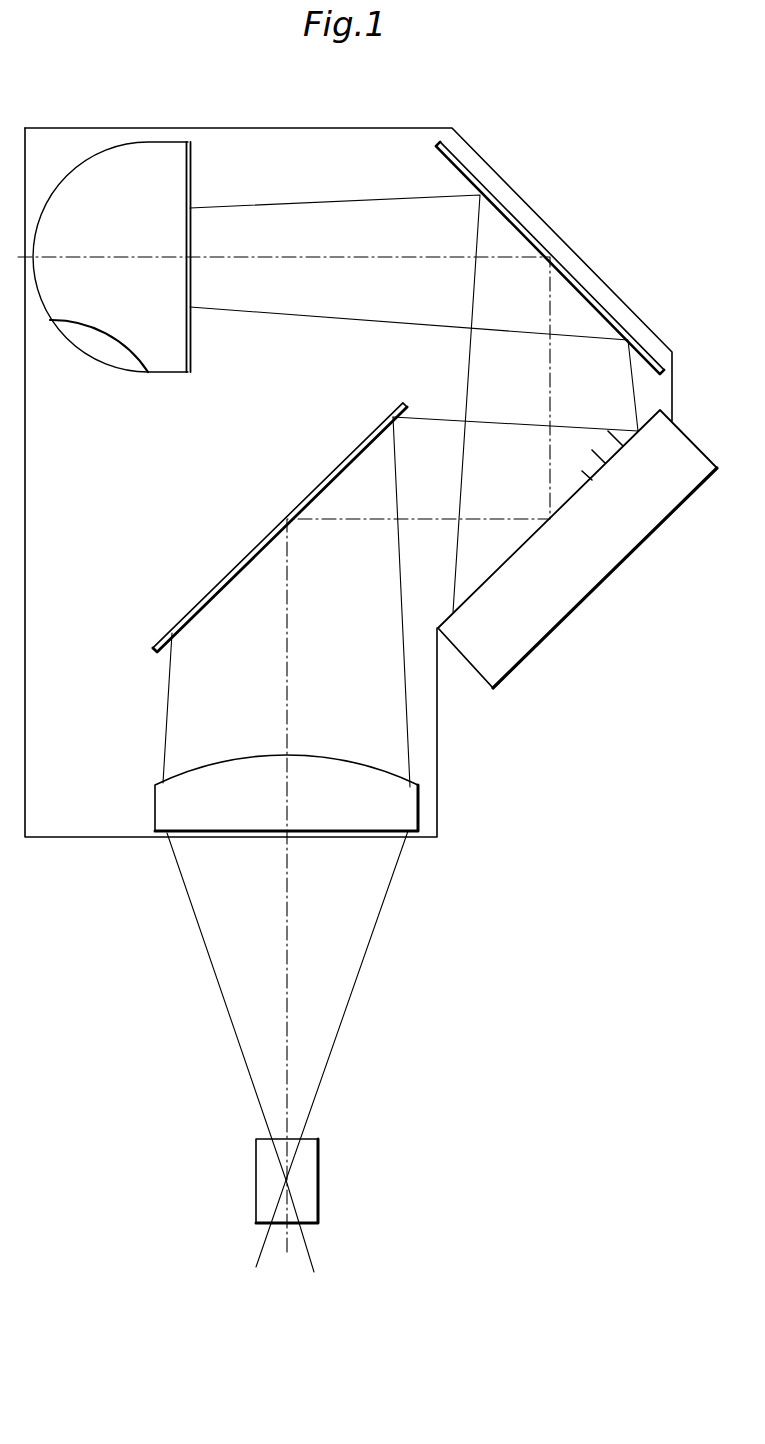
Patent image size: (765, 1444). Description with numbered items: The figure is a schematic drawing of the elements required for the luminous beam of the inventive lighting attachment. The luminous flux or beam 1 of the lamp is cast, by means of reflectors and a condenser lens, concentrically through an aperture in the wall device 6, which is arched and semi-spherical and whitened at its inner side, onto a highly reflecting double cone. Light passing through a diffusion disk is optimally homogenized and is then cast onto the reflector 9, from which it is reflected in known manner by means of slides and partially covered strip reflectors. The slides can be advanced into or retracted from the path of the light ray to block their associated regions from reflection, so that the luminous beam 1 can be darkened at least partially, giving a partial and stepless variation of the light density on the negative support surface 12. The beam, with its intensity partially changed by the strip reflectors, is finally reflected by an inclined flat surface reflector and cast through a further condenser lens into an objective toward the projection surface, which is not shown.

The luminous beam 1 is at (317, 317).
The wall device 6 is at (175, 186).
The reflector 9 is at (440, 156).
The negative support surface 12 is at (218, 807).